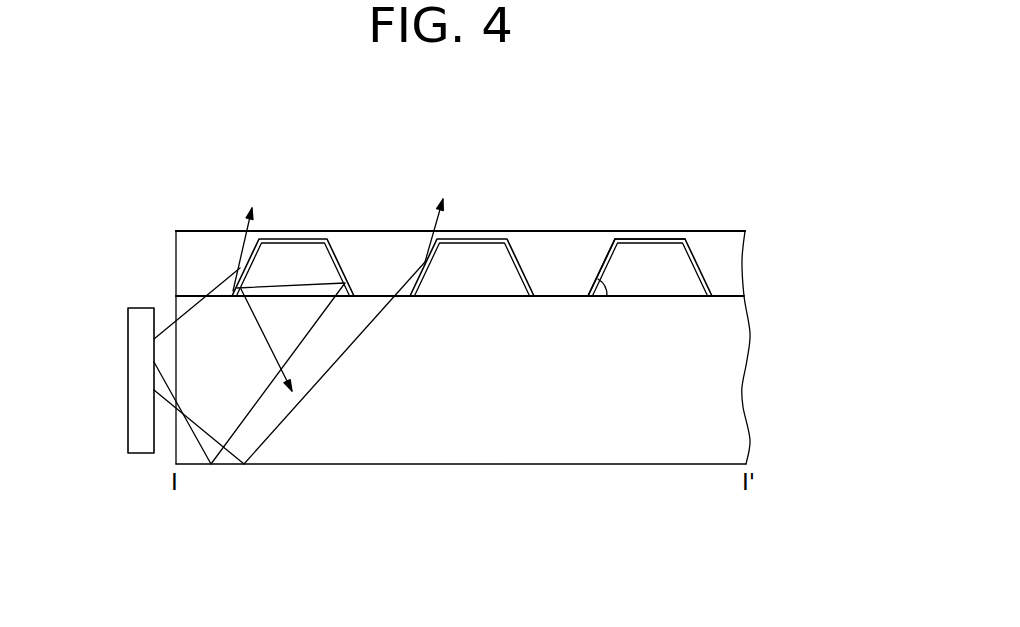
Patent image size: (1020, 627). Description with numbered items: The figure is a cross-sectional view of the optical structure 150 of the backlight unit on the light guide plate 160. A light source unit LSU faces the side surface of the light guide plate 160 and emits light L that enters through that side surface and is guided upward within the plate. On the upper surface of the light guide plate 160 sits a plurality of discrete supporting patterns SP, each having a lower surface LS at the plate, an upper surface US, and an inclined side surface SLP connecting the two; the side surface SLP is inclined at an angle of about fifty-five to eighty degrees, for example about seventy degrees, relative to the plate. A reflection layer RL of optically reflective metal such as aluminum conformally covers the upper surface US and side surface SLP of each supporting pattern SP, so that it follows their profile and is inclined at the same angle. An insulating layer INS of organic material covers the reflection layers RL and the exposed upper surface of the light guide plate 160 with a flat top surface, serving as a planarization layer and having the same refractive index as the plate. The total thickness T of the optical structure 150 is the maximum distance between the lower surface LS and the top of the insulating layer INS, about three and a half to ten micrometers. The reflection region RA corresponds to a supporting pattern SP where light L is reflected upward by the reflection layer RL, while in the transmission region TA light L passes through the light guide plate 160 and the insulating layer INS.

The optical structure 150 is at (832, 235).
The light guide plate 160 is at (735, 402).
The insulating layer INS is at (735, 245).
The reflection layer RL is at (704, 277).
The supporting pattern SP is at (685, 290).
The side surface SLP is at (606, 254).
The upper surface US is at (649, 242).
The lower surface LS is at (640, 297).
The light source unit LSU is at (138, 384).
The light L is at (341, 233).
The total thickness T is at (170, 232).
The reflection region RA is at (354, 296).
The transmission region TA is at (410, 296).